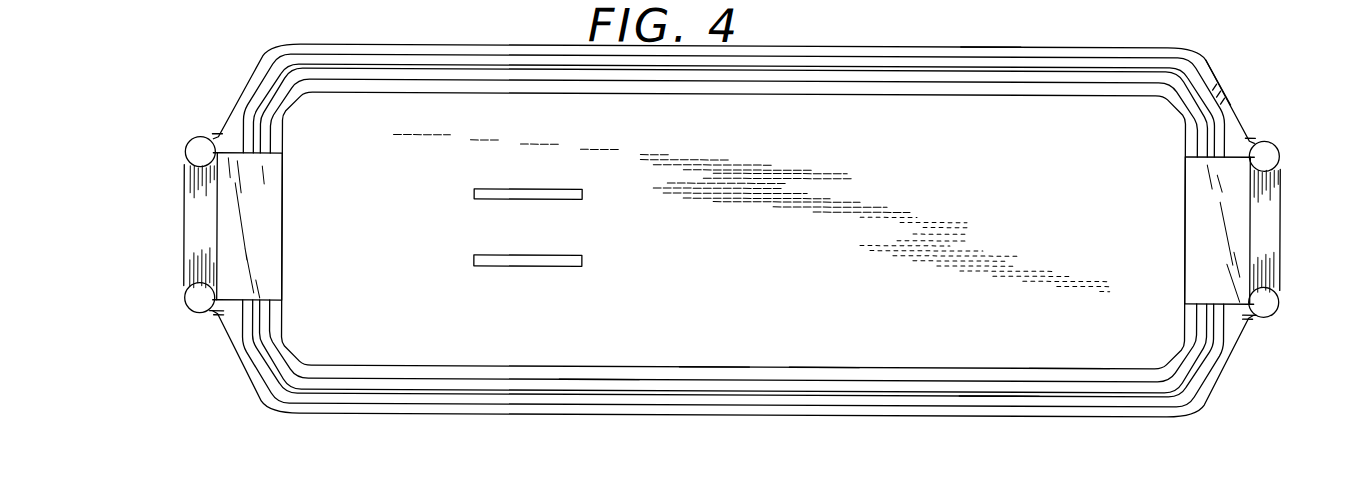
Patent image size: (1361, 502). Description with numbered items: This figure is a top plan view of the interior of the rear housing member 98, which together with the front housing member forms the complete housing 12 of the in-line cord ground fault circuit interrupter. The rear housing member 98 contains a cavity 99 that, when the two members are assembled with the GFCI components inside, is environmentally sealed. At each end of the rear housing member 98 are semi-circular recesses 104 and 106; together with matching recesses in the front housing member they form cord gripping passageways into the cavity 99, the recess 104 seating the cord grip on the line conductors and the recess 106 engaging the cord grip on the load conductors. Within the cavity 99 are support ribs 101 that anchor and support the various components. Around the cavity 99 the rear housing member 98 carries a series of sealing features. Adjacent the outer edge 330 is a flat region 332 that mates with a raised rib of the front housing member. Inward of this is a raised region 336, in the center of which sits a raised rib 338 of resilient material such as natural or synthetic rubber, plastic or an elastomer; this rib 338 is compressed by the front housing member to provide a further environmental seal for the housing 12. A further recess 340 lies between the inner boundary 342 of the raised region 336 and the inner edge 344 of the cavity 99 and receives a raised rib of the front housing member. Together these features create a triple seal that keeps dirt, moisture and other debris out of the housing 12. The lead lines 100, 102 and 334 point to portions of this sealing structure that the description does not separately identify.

The housing 12 is at (418, 420).
The rear housing member 98 is at (253, 391).
The cavity 99 is at (1068, 117).
The top wall 100 is at (991, 46).
The support ribs 101 is at (553, 200).
The bottom inner wall 102 is at (1068, 371).
The semi-circular recess 104 is at (1237, 237).
The semi-circular recess 106 is at (217, 223).
The outer edge 330 is at (1233, 55).
The flat region 332 is at (1207, 86).
The third layer 334 is at (1215, 111).
The raised region 336 is at (1212, 146).
The raised rib 338 is at (1008, 394).
The recess 340 is at (718, 372).
The inner boundary 342 is at (605, 378).
The inner edge 344 is at (825, 372).